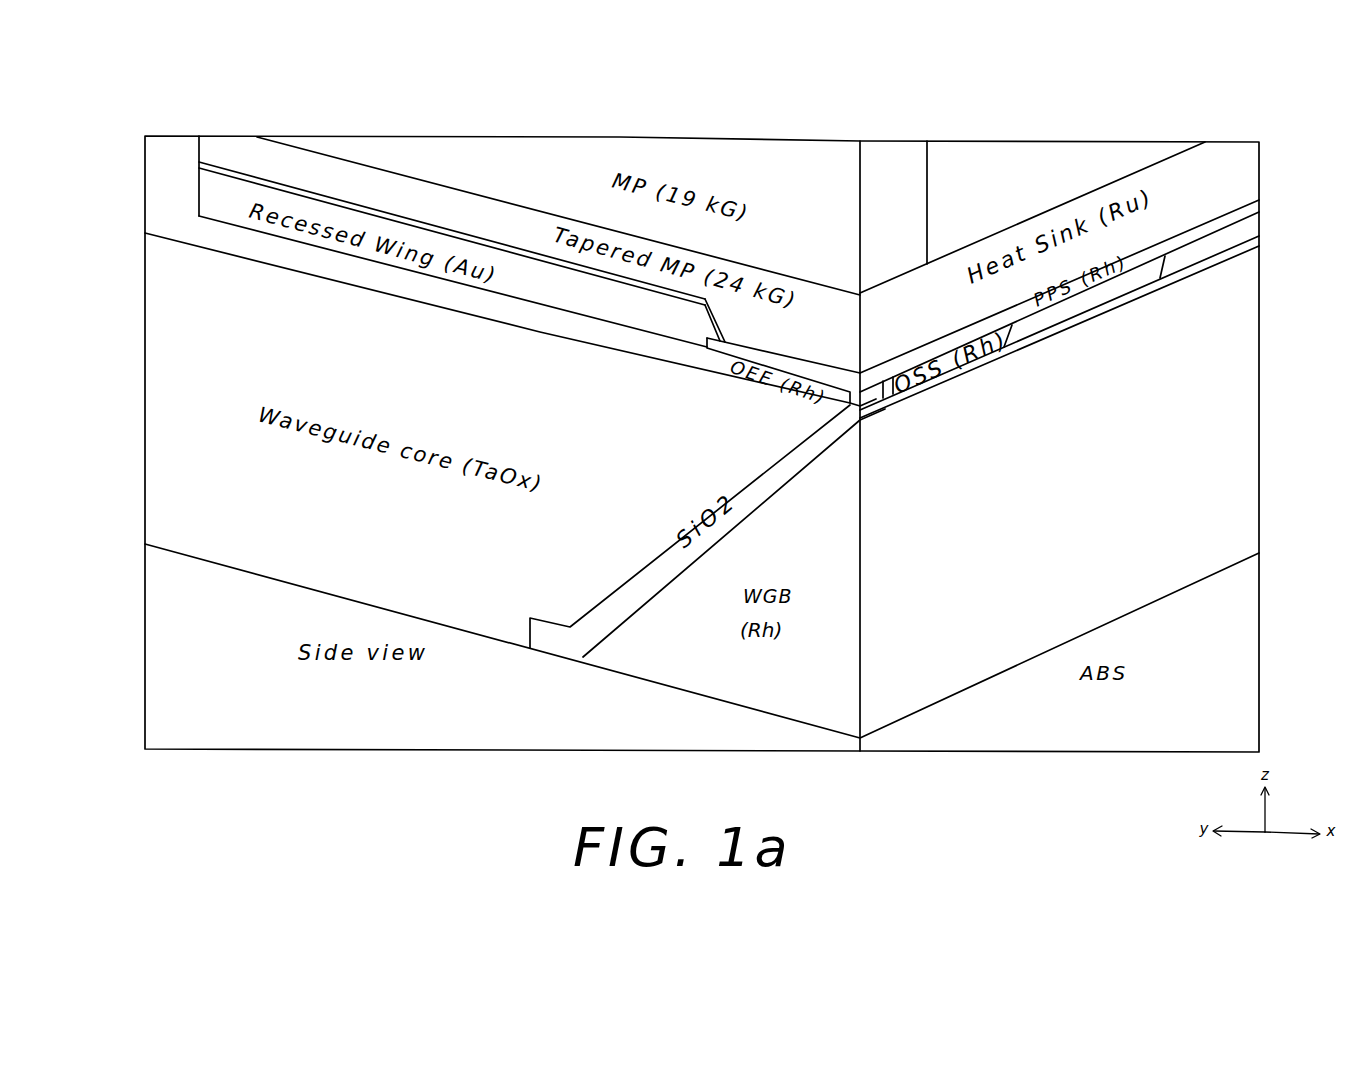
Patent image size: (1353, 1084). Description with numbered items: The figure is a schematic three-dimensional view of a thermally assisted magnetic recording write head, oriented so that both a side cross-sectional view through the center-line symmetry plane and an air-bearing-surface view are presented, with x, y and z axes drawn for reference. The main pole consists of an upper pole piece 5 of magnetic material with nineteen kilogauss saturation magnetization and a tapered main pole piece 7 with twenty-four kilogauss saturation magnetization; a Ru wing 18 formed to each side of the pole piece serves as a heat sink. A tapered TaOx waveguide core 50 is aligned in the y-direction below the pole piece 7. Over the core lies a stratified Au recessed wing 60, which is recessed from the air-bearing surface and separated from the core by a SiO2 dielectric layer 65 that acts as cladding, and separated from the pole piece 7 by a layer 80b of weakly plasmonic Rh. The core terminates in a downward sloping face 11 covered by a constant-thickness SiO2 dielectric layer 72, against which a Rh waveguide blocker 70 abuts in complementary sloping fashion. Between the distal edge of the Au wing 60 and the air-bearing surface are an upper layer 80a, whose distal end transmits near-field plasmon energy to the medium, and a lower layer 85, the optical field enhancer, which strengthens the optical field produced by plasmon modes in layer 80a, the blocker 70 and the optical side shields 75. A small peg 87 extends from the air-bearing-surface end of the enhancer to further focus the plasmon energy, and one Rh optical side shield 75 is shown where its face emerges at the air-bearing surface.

The upper pole piece 5 is at (892, 160).
The tapered main pole piece 7 is at (900, 358).
The downward sloping face 11 is at (672, 535).
The Ru wing 18 is at (1240, 182).
The waveguide core 50 is at (160, 323).
The recessed wing 60 is at (218, 186).
The dielectric layer 65 is at (511, 316).
The waveguide blocker 70 is at (1240, 287).
The dielectric layer 72 is at (635, 590).
The optical side shield 75 is at (950, 370).
The upper layer 80a is at (715, 340).
The layer of weakly plasmonic material 80b is at (281, 183).
The lower layer 85 is at (732, 360).
The peg 87 is at (868, 393).